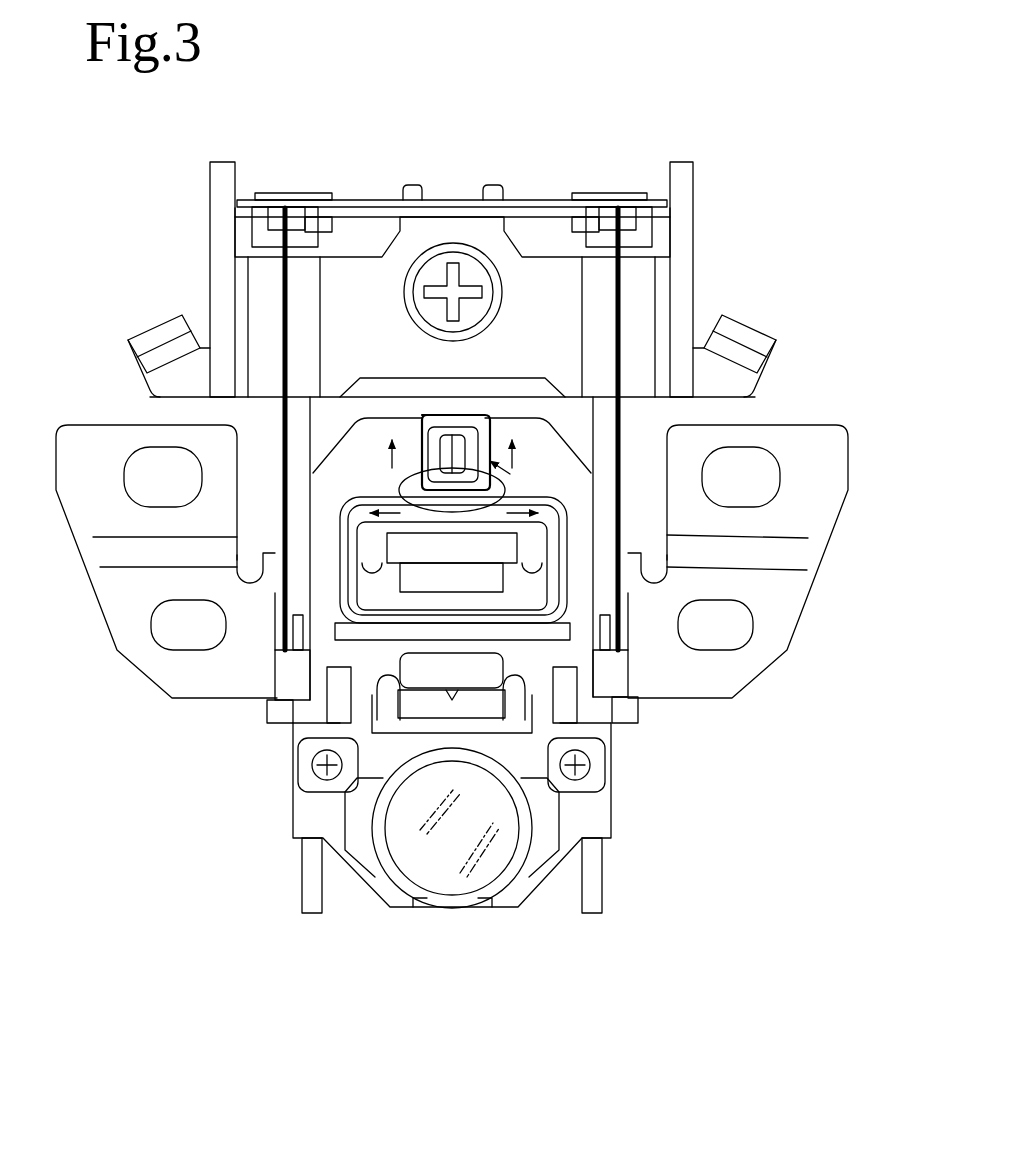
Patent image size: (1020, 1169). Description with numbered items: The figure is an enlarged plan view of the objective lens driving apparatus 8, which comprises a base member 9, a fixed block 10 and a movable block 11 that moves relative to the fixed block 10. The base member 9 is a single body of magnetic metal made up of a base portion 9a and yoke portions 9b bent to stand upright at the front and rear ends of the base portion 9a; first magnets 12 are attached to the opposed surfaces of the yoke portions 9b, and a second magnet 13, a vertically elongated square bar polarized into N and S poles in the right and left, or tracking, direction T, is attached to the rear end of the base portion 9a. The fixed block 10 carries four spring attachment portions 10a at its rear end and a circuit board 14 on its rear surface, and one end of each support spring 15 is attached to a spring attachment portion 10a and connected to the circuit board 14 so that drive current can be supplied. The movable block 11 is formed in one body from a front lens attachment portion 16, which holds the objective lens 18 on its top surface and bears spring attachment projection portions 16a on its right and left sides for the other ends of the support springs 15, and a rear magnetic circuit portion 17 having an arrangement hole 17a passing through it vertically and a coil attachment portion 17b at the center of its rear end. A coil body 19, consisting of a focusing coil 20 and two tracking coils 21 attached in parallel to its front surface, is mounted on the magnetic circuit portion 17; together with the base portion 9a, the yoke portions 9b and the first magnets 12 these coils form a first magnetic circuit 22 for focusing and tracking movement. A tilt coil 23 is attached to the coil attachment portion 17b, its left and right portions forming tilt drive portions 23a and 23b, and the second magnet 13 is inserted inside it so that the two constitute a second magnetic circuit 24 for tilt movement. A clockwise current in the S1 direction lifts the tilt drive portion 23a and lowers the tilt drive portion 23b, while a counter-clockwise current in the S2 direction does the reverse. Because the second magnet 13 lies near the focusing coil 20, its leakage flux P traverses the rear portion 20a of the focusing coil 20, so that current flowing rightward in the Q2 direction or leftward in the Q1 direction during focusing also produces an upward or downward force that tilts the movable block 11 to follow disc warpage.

The objective lens driving apparatus 8 is at (760, 188).
The base member 9 is at (755, 668).
The base portion 9a is at (712, 683).
The yoke portions 9b is at (393, 550).
The fixed block 10 is at (678, 258).
The spring attachment portions 10a is at (262, 222).
The movable block 11 is at (598, 823).
The first magnets 12 is at (425, 578).
The second magnet 13 is at (437, 420).
The circuit board 14 is at (372, 200).
The support springs 15 is at (283, 283).
The lens attachment portion 16 is at (305, 820).
The spring attachment projection portions 16a is at (150, 678).
The magnetic circuit portion 17 is at (620, 543).
The arrangement hole 17a is at (600, 580).
The coil attachment portion 17b is at (413, 475).
The objective lens 18 is at (443, 870).
The coil body 19 is at (360, 572).
The focusing coil 20 is at (355, 565).
The portion 20a is at (560, 422).
The tracking coils 21 is at (335, 632).
The first magnetic circuit 22 is at (572, 537).
The tilt coil 23 is at (447, 437).
The tilt drive portion 23a is at (425, 447).
The tilt drive portion 23b is at (482, 440).
The second magnetic circuit 24 is at (478, 410).
The leakage flux P is at (313, 473).
The S1 direction S1 is at (400, 460).
The S2 direction S2 is at (520, 457).
The Q1 direction Q1 is at (410, 482).
The Q2 direction Q2 is at (493, 505).
The tracking direction T is at (574, 1000).